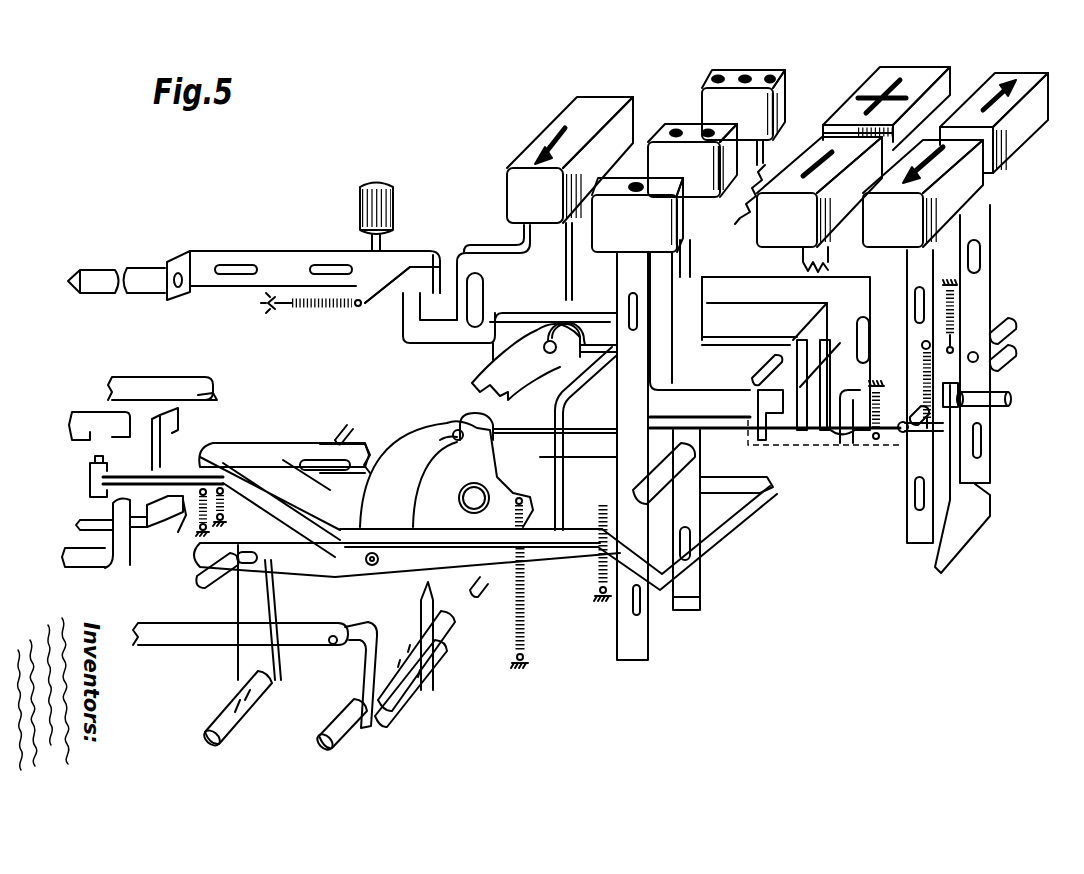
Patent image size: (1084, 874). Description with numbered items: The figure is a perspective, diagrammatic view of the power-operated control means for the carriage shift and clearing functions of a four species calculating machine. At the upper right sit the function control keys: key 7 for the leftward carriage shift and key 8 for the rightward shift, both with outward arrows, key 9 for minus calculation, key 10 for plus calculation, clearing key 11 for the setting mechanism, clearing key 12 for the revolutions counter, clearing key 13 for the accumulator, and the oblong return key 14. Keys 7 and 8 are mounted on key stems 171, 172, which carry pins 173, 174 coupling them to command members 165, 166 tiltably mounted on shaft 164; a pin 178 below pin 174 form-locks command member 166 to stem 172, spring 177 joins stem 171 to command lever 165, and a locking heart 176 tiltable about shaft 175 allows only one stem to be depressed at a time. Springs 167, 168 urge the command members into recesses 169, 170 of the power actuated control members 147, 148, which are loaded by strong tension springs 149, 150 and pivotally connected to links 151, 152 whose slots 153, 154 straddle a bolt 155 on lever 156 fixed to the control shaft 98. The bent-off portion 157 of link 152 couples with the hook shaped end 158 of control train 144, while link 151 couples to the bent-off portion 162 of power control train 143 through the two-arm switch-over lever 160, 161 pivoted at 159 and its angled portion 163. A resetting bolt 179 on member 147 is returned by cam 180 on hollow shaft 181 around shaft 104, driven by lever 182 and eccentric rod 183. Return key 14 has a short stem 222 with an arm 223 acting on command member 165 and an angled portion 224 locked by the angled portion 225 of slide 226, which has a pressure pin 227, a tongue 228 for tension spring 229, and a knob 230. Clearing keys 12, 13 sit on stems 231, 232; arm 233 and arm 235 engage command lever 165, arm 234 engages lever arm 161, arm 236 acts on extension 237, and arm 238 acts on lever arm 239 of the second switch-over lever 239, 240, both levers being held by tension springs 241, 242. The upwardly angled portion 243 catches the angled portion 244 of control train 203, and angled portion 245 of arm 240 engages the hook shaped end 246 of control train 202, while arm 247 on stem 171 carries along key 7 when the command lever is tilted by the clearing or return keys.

The function control key 7 is at (948, 204).
The function control key 8 is at (1020, 143).
The function control key 9 is at (816, 146).
The function control key 10 is at (903, 78).
The clearing key 11 is at (743, 77).
The clearing key 12 is at (690, 134).
The clearing key 13 is at (640, 183).
The return key 14 is at (547, 138).
The control shaft 98 is at (240, 727).
The shaft 104 is at (345, 745).
The power control train 143 is at (71, 571).
The control train 144 is at (94, 530).
The power actuated control member 147 is at (475, 482).
The power actuated control member 148 is at (555, 400).
The tension spring 149 is at (510, 656).
The tension spring 150 is at (602, 602).
The link 151 is at (420, 440).
The link 152 is at (475, 367).
The slot 153 is at (222, 582).
The slot 154 is at (356, 456).
The bolt 155 is at (347, 424).
The lever 156 is at (270, 600).
The rectangularly bent-off portion 157 is at (220, 444).
The hook shaped end 158 is at (177, 537).
The pivot 159 is at (375, 568).
The lever arm 160 is at (133, 474).
The lever arm 161 is at (505, 565).
The rectangularly bent-off portion 162 is at (128, 562).
The angled portion 163 is at (90, 497).
The shaft 164 is at (672, 478).
The command member 165 is at (924, 428).
The command member 166 is at (893, 352).
The spring 167 is at (875, 441).
The spring 168 is at (954, 312).
The recess 169 is at (492, 437).
The recess 170 is at (575, 340).
The key stem 171 is at (918, 548).
The key stem 172 is at (987, 466).
The pin 173 is at (935, 428).
The pin 174 is at (1008, 330).
The shaft 175 is at (1012, 398).
The locking heart 176 is at (976, 520).
The spring 177 is at (948, 395).
The pin 178 is at (1000, 366).
The resetting bolt 179 is at (474, 596).
The cam 180 is at (402, 631).
The hollow shaft 181 is at (452, 705).
The lever 182 is at (347, 694).
The eccentric rod 183 is at (152, 640).
The control train 202 is at (158, 384).
The control train 203 is at (84, 412).
The key stem 222 is at (532, 233).
The arm 223 is at (825, 432).
The angled portion 224 is at (408, 322).
The angled portion 225 is at (438, 275).
The slide 226 is at (284, 258).
The pressure pin 227 is at (102, 277).
The tongue 228 is at (352, 306).
The tension spring 229 is at (298, 306).
The knob 230 is at (386, 208).
The key stem 231 is at (686, 608).
The key stem 232 is at (634, 652).
The arm 233 is at (772, 445).
The arm 234 is at (594, 588).
The arm 235 is at (801, 432).
The arm 236 is at (730, 505).
The extension 237 is at (745, 532).
The arm 238 is at (558, 547).
The lever arm 239 is at (430, 536).
The lever arm 240 is at (345, 514).
The tension spring 241 is at (198, 504).
The tension spring 242 is at (226, 502).
The upwardly angled portion 243 is at (90, 470).
The angled portion 244 is at (104, 438).
The angled portion 245 is at (168, 426).
The hook shaped end 246 is at (200, 394).
The arm 247 is at (878, 472).